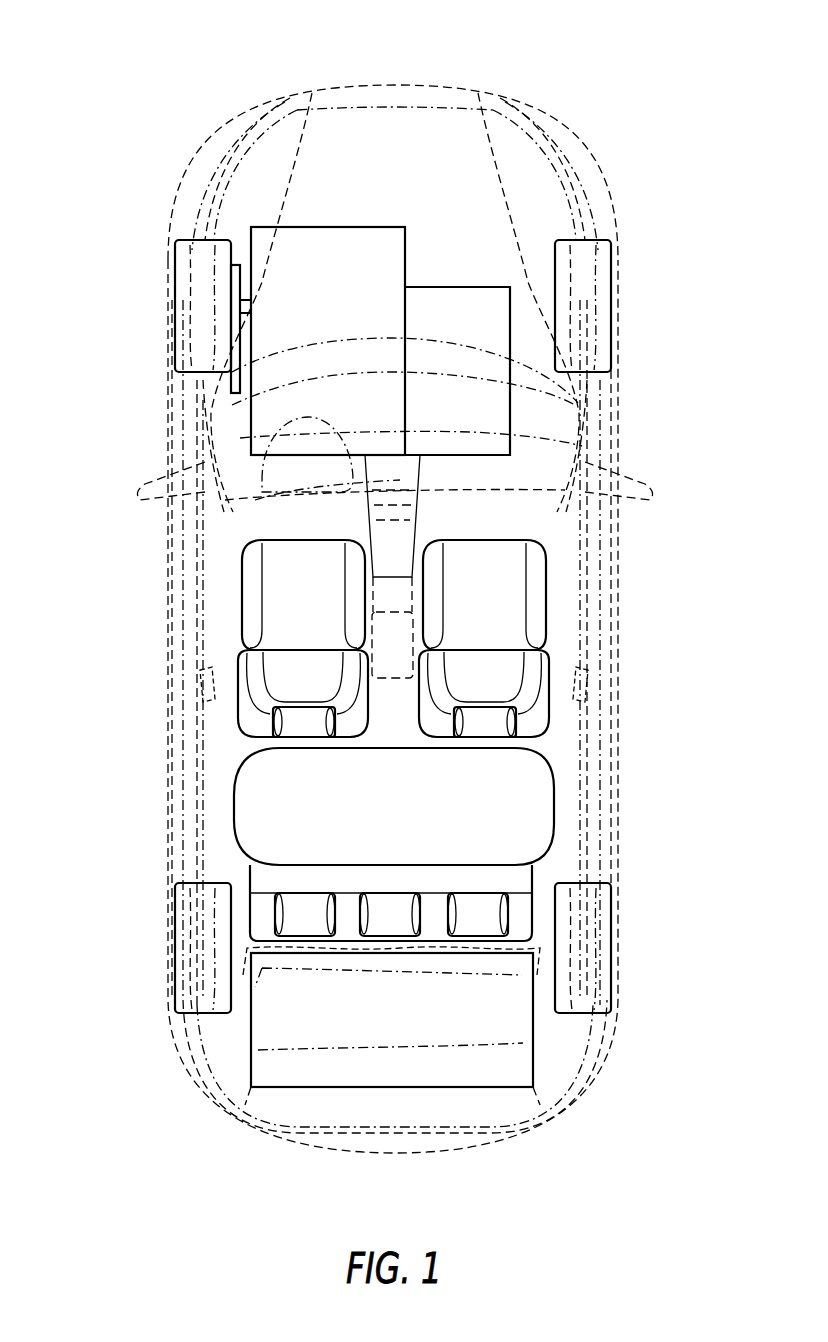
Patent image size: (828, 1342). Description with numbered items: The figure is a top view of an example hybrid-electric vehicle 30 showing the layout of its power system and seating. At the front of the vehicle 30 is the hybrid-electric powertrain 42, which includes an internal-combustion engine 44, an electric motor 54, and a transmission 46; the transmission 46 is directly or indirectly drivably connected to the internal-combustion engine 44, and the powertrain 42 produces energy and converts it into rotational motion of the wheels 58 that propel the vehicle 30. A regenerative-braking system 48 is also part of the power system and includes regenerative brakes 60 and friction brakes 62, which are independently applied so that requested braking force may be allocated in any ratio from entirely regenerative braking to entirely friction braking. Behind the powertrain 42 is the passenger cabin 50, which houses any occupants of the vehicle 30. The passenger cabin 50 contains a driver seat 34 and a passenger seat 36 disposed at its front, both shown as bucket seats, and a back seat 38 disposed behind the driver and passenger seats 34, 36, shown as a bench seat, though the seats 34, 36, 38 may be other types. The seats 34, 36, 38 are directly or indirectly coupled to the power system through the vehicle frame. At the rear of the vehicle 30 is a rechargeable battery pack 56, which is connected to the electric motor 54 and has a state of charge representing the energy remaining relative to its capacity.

The hybrid-electric vehicle 30 is at (84, 60).
The driver seat 34 is at (242, 612).
The passenger seat 36 is at (547, 612).
The back seat 38 is at (554, 822).
The hybrid-electric powertrain 42 is at (520, 419).
The internal-combustion engine 44 is at (447, 287).
The transmission 46 is at (432, 470).
The regenerative-braking system 48 is at (134, 97).
The passenger cabin 50 is at (583, 742).
The electric motor 54 is at (386, 227).
The battery pack 56 is at (533, 1057).
The wheels 58 is at (175, 285).
The regenerative brakes 60 is at (264, 226).
The friction brakes 62 is at (240, 264).